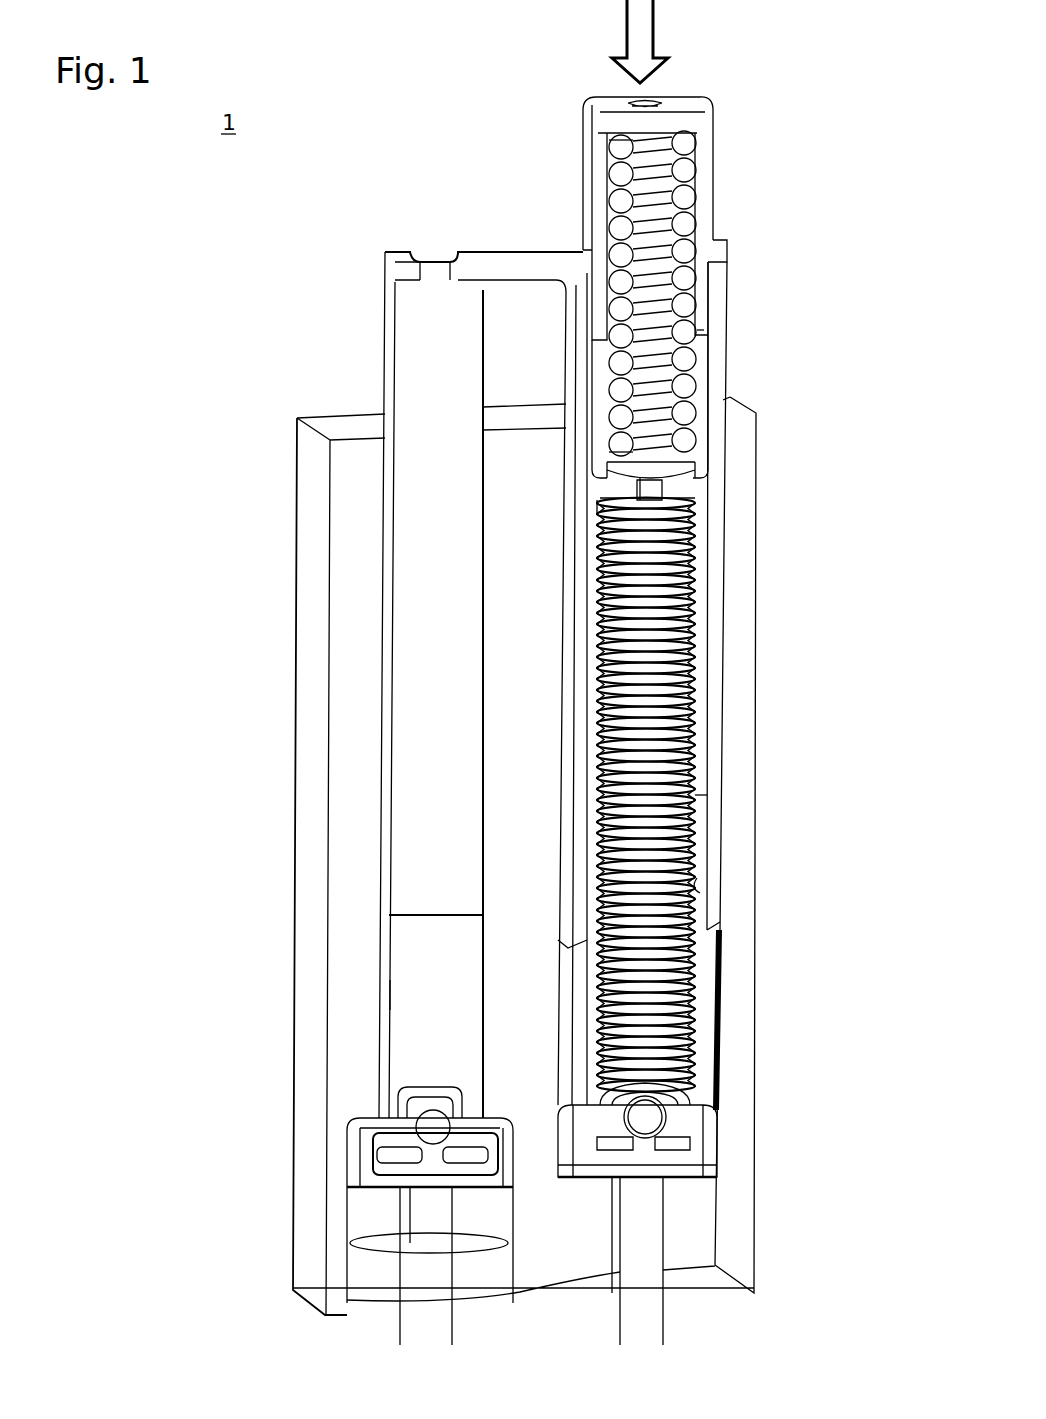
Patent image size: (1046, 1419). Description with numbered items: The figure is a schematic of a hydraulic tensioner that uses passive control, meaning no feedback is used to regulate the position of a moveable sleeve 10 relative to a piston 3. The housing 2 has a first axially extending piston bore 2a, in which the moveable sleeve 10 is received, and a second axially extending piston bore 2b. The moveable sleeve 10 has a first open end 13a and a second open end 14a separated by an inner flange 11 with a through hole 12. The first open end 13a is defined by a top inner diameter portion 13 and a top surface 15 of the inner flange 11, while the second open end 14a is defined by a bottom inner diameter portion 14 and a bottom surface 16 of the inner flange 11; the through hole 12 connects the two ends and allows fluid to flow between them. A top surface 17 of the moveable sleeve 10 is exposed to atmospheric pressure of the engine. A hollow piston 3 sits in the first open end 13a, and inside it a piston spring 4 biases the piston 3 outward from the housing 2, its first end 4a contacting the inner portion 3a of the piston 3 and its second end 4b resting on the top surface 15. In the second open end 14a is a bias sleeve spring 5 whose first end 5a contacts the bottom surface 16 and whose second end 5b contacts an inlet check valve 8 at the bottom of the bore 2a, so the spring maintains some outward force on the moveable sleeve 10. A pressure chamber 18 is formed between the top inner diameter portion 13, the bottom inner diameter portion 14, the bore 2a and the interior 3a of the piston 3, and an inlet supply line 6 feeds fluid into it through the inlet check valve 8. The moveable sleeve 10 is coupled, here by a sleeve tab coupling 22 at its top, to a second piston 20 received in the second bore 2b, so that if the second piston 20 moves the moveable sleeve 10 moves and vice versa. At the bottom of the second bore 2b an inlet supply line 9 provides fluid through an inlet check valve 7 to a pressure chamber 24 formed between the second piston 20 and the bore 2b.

The housing 2 is at (297, 438).
The first axially extending piston bore 2a is at (700, 1028).
The second axially extending piston bore 2b is at (385, 1010).
The piston 3 is at (678, 100).
The inner portion of the hollow piston 3a is at (608, 146).
The piston spring 4 is at (690, 230).
The first end of the piston spring 4a is at (680, 155).
The second end of the piston spring 4b is at (620, 465).
The bias sleeve spring 5 is at (690, 680).
The first end of the bias sleeve spring 5a is at (680, 495).
The second end of the bias sleeve spring 5b is at (585, 1150).
The inlet supply line 6 is at (645, 1315).
The inlet check valve 7 is at (423, 1137).
The inlet check valve 8 is at (648, 1122).
The inlet supply line 9 is at (423, 1318).
The moveable sleeve 10 is at (713, 560).
The inner flange 11 is at (672, 478).
The through hole 12 is at (645, 478).
The top inner diameter portion 13 is at (697, 388).
The first open end 13a is at (697, 350).
The bottom inner diameter portion 14 is at (700, 885).
The second open end 14a is at (700, 805).
The top surface of the inner flange 15 is at (685, 465).
The bottom surface of the inner flange 16 is at (600, 508).
The top surface of the moveable sleeve 17 is at (727, 245).
The pressure chamber 18 is at (705, 985).
The second piston 20 is at (410, 390).
The coupling 22 is at (515, 262).
The pressure chamber 24 is at (452, 955).